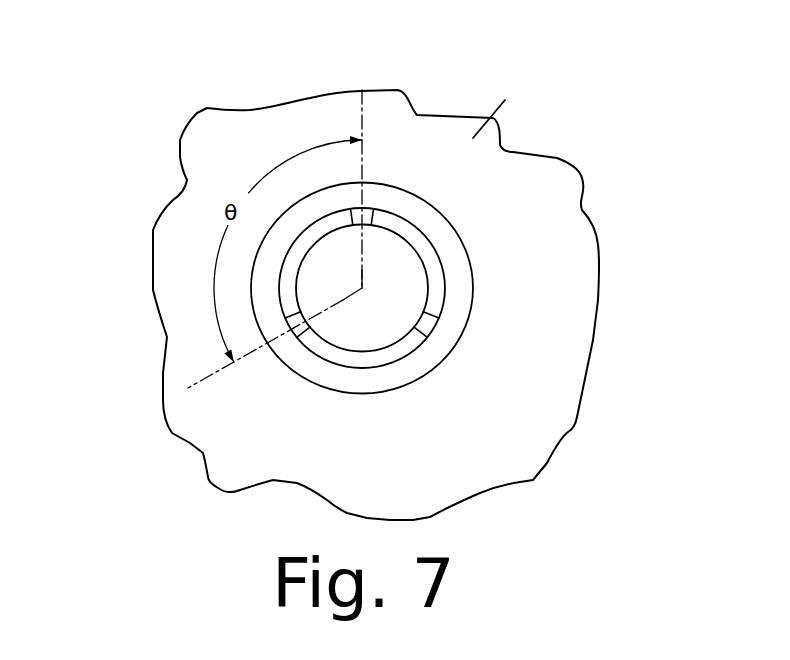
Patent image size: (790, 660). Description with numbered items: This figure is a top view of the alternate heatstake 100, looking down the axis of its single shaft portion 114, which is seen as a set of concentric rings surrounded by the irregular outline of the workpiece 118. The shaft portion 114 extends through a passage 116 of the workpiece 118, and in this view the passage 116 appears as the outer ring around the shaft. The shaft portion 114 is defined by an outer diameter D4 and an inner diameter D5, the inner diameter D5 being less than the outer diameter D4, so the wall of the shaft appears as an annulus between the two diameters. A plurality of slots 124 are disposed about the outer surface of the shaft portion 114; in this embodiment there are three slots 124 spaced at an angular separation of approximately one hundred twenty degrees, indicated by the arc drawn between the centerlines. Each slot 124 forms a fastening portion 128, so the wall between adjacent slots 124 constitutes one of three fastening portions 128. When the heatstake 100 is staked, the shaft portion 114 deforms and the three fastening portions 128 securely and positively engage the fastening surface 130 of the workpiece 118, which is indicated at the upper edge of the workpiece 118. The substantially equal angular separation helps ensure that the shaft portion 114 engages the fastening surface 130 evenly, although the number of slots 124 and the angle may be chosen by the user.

The heatstake 100 is at (205, 90).
The workpiece 118 is at (177, 198).
The fastening surface 130 is at (505, 107).
The shaft portion 114 is at (410, 212).
The passage 116 is at (382, 375).
The slots 124 is at (368, 210).
The fastening portion 128 is at (328, 220).
The outer diameter D4 is at (422, 225).
The inner diameter D5 is at (430, 272).